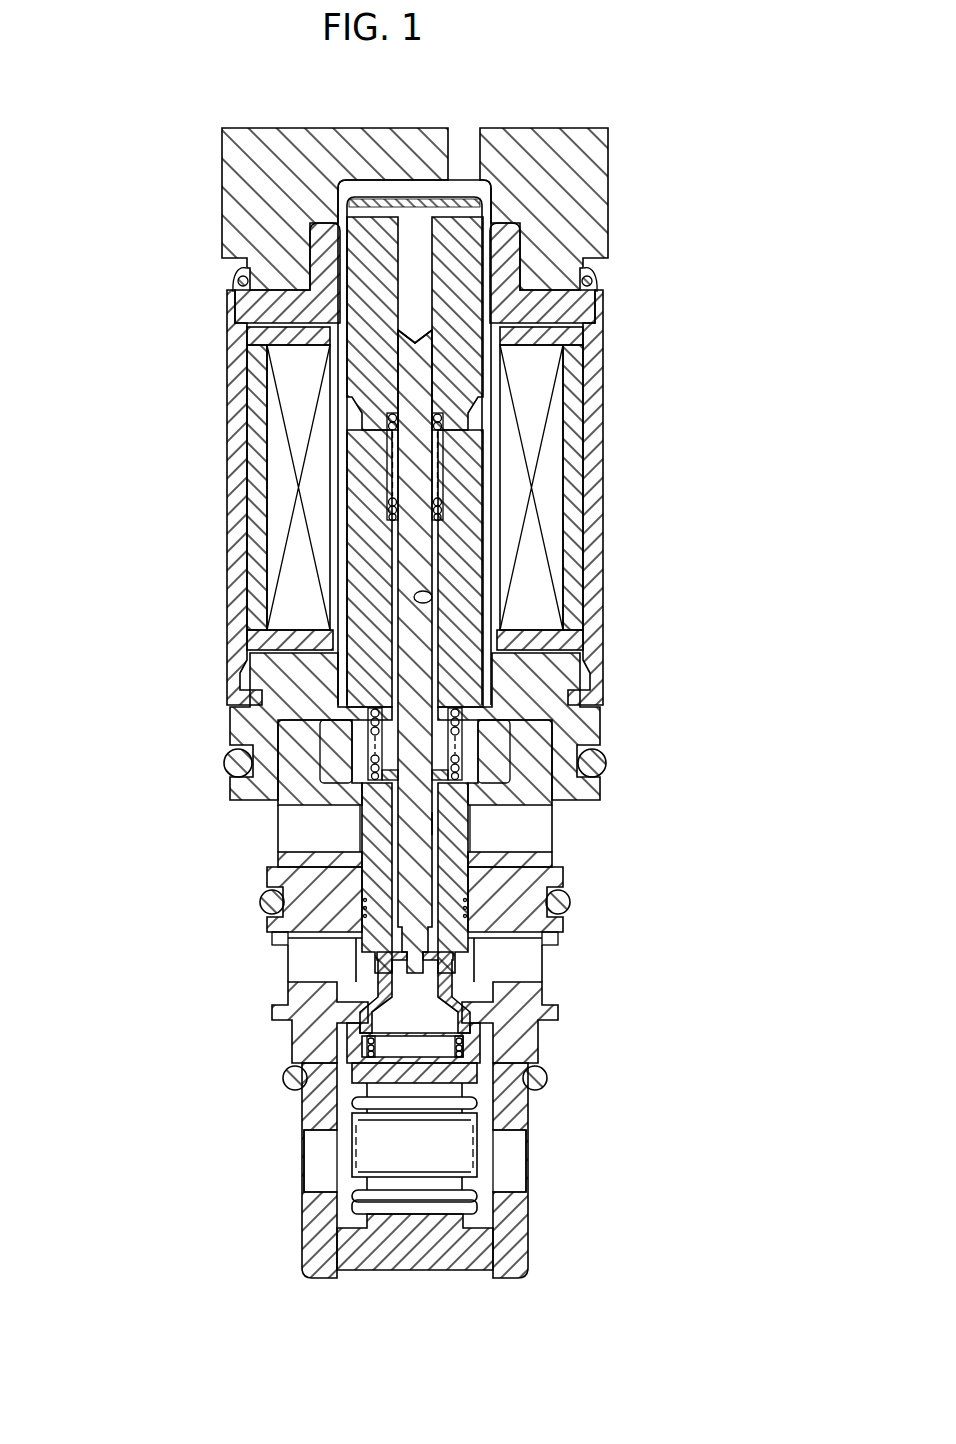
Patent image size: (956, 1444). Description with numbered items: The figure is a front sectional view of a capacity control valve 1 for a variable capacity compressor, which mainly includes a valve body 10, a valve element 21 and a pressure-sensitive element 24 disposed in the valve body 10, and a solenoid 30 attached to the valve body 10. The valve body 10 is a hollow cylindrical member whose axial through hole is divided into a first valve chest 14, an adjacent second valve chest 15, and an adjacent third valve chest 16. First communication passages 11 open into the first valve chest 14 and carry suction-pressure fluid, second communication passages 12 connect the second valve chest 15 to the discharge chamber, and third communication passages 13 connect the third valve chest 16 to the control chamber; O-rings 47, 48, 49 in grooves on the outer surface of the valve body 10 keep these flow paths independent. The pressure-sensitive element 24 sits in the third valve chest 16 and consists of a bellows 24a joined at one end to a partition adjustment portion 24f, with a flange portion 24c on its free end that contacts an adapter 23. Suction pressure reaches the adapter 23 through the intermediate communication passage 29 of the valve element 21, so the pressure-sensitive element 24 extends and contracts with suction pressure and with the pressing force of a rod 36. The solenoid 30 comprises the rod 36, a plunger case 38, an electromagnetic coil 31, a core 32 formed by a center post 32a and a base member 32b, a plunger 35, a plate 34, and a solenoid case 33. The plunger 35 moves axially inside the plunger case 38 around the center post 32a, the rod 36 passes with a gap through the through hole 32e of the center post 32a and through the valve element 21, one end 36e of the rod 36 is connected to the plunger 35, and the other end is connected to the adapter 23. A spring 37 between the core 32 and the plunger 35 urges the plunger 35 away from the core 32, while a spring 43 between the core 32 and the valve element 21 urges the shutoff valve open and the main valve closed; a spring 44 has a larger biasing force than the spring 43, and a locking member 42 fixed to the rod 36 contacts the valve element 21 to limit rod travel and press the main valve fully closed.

The capacity control valve 1 is at (180, 137).
The valve body 10 is at (130, 800).
The first communication passages 11 is at (318, 818).
The second communication passages 12 is at (322, 950).
The third communication passages 13 is at (320, 1160).
The first valve chest 14 is at (355, 848).
The second valve chest 15 is at (347, 963).
The third valve chest 16 is at (345, 1180).
The valve element 21 is at (453, 897).
The adapter 23 is at (453, 987).
The pressure-sensitive element 24 is at (483, 1153).
The bellows 24a is at (450, 1180).
The flange portion 24c is at (450, 1073).
The partition adjustment portion 24f is at (411, 1272).
The intermediate communication passage 29 is at (433, 822).
The solenoid 30 is at (208, 488).
The electromagnetic coil 31 is at (290, 600).
The core 32 is at (122, 627).
The center post 32a is at (370, 655).
The base member 32b is at (290, 690).
The through hole 32e is at (415, 600).
The solenoid case 33 is at (240, 568).
The plate 34 is at (270, 308).
The plunger 35 is at (370, 378).
The rod 36 is at (412, 556).
The one end of the rod 36e is at (425, 360).
The spring 37 is at (390, 466).
The plunger case 38 is at (340, 193).
The locking member 42 is at (462, 766).
The spring 43 is at (460, 688).
The spring 44 is at (460, 1033).
The O-ring 47 is at (226, 763).
The O-ring 48 is at (258, 906).
The O-ring 49 is at (283, 1088).